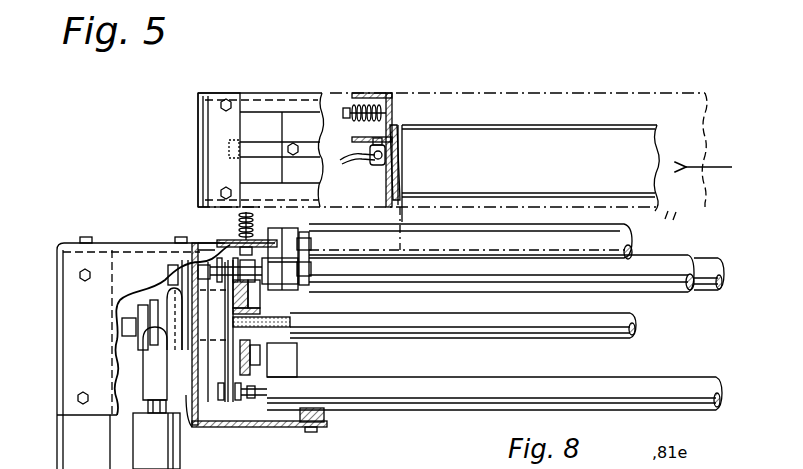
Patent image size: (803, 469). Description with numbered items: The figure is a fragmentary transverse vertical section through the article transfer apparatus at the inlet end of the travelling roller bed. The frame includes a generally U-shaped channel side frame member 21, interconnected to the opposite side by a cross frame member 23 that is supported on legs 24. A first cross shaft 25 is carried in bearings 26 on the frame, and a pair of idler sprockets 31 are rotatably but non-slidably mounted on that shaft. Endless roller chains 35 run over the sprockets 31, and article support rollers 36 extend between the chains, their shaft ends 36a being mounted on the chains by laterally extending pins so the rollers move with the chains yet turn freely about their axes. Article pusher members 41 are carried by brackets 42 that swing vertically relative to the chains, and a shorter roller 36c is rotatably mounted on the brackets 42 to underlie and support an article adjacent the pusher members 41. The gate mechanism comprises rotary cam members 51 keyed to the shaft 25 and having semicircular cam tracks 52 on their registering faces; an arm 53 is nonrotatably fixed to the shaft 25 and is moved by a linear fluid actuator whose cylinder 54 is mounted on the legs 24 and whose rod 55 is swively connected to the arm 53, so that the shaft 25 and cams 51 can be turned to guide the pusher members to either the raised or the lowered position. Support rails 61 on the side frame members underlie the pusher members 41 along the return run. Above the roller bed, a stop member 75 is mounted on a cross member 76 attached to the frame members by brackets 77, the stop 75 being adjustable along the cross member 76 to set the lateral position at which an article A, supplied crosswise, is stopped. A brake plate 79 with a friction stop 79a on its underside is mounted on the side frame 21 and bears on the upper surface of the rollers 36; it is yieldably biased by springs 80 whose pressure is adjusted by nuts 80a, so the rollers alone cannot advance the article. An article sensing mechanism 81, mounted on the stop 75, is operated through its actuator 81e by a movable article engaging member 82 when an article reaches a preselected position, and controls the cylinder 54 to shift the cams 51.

The side frame member 21 is at (192, 427).
The cross frame member 23 is at (128, 252).
The legs 24 is at (63, 425).
The first cross shaft 25 is at (484, 327).
The bearings 26 is at (183, 265).
The idler sprockets 31 is at (215, 308).
The endless chains 35 is at (221, 401).
The article support rollers 36 is at (710, 258).
The shaft ends 36a is at (253, 397).
The roller 36c is at (658, 272).
The article pusher members 41 is at (620, 238).
The brackets 42 is at (290, 282).
The rotary cam members 51 is at (260, 323).
The cam tracks 52 is at (256, 300).
The arm 53 is at (140, 346).
The cylinder 54 is at (150, 448).
The rod 55 is at (150, 410).
The support rails 61 is at (324, 422).
The stop member 75 is at (383, 95).
The cross member 76 is at (255, 92).
The brackets 77 is at (213, 148).
The brake plate 79 is at (274, 240).
The friction stop 79a is at (310, 233).
The springs 80 is at (247, 236).
The nuts 80a is at (250, 207).
The article sensing mechanism 81 is at (370, 166).
The actuator 81e is at (398, 127).
The movable article engaging member 82 is at (394, 187).
The article A is at (566, 187).